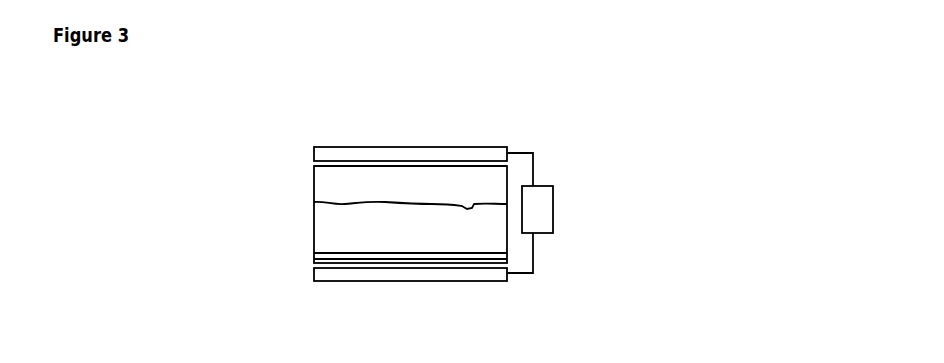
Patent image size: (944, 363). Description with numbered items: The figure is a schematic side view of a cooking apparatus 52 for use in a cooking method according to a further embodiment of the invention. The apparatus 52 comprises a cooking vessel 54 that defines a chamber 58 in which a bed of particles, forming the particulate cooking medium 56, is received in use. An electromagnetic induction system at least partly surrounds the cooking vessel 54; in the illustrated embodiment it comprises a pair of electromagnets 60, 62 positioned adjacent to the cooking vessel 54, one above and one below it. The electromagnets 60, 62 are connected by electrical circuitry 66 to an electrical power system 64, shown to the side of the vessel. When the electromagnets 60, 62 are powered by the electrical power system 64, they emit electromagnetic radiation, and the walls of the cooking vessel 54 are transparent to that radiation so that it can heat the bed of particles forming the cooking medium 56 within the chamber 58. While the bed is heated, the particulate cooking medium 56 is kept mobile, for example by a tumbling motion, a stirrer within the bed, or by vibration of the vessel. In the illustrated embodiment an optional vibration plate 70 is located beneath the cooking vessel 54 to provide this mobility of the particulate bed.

The cooking apparatus 52 is at (182, 203).
The cooking vessel 54 is at (313, 183).
The particulate cooking medium 56 is at (339, 217).
The chamber 58 is at (427, 178).
The electromagnet 60 is at (358, 152).
The electromagnet 62 is at (335, 277).
The electrical power system 64 is at (545, 205).
The electrical circuitry 66 is at (532, 163).
The vibration plate 70 is at (488, 257).